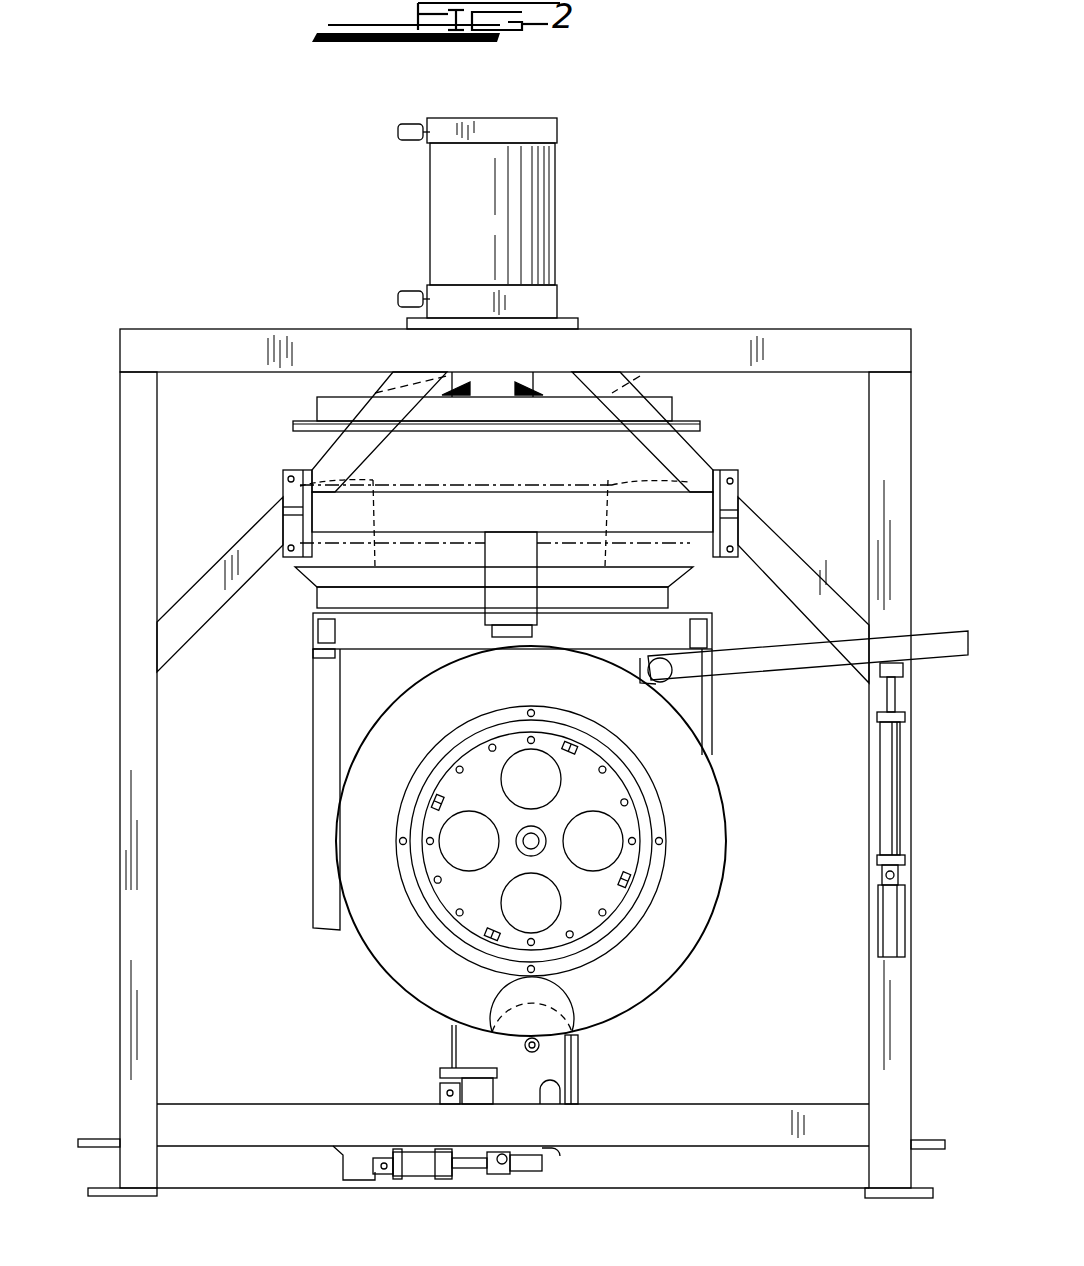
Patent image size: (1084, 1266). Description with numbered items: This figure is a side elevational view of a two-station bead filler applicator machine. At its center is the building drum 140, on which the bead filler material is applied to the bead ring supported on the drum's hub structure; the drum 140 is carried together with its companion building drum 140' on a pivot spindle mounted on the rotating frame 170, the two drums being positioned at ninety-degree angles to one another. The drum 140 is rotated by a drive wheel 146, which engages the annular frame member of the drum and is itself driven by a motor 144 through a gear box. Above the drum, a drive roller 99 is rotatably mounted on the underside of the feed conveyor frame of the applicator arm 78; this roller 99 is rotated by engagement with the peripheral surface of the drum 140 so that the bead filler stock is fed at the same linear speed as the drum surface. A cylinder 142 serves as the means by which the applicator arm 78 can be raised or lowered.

The lever arm 78 is at (757, 672).
The drive roller 99 is at (663, 696).
The building drum 140 is at (538, 841).
The building drum 140' is at (647, 551).
The cylinder 142 is at (880, 783).
The motor 144 is at (560, 1152).
The drive wheel 146 is at (550, 1052).
The frame 170 is at (313, 736).